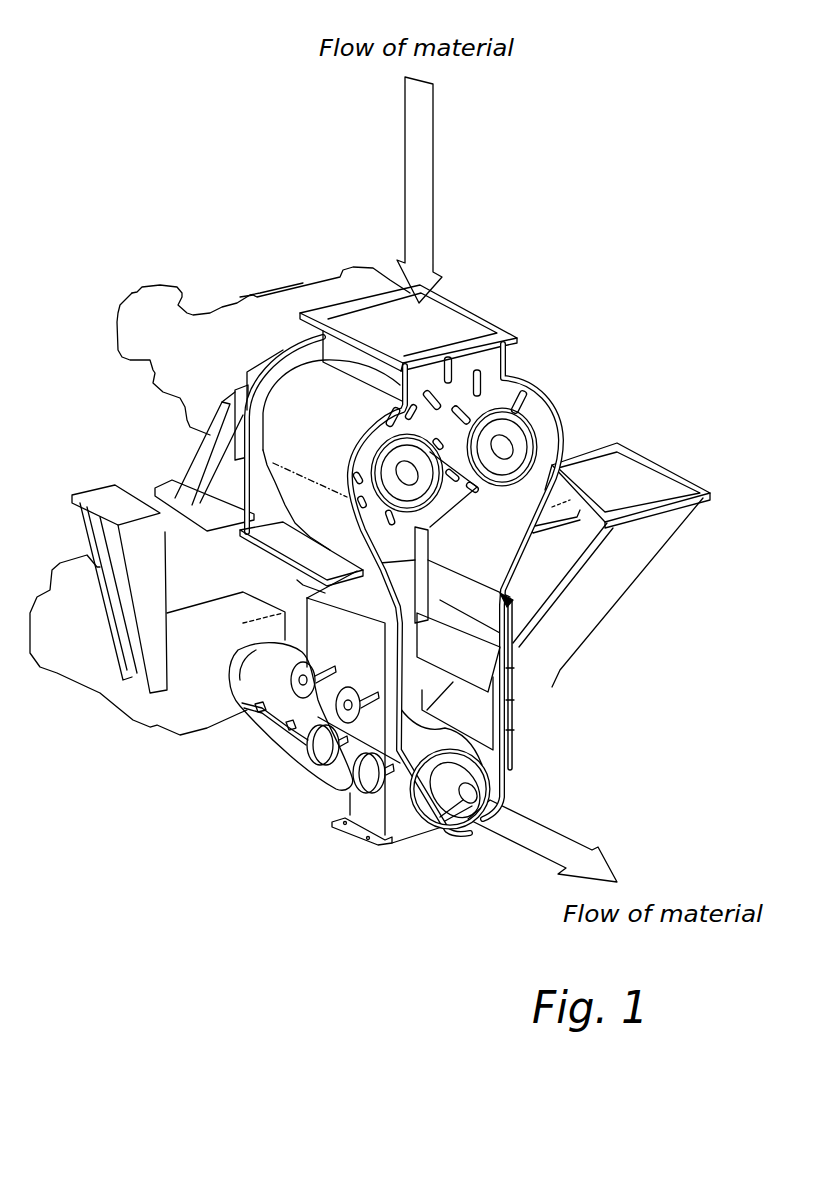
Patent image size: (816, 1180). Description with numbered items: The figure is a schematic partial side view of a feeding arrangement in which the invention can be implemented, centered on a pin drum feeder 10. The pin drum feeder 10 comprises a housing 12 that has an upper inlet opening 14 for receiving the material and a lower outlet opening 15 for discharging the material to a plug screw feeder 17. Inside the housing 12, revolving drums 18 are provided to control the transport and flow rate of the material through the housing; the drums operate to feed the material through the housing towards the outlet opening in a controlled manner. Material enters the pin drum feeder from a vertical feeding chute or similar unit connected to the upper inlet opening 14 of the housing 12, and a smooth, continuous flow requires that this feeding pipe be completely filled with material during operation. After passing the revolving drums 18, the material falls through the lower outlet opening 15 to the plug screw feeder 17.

The pin drum feeder 10 is at (521, 364).
The housing 12 is at (325, 397).
The upper inlet opening 14 is at (455, 343).
The lower outlet opening 15 is at (498, 646).
The plug screw feeder 17 is at (450, 780).
The revolving drums 18 is at (520, 436).